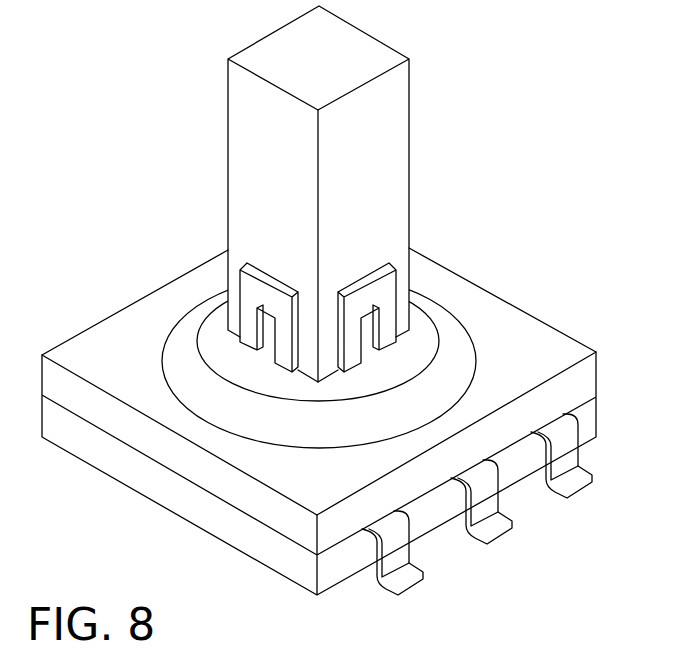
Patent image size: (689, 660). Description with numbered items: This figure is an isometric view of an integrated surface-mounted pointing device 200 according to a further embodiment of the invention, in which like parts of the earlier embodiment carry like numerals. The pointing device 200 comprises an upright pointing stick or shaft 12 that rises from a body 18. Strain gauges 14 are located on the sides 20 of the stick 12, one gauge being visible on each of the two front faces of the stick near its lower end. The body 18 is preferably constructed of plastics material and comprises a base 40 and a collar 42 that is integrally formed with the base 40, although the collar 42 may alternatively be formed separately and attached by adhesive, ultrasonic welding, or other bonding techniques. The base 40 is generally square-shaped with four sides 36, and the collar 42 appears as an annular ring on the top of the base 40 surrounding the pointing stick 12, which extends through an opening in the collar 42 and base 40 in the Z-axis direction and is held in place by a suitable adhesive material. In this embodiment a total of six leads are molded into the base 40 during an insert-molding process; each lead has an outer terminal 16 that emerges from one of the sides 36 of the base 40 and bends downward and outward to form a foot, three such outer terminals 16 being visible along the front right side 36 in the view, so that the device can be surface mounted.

The integrated surface-mounted pointing device 200 is at (512, 133).
The pointing stick 12 is at (278, 194).
The sides of the stick 20 is at (256, 175).
The strain gauges 14 is at (217, 276).
The body 18 is at (354, 406).
The base 40 is at (563, 357).
The collar 42 is at (458, 348).
The sides 36 is at (577, 387).
The outer terminal 16 is at (403, 573).